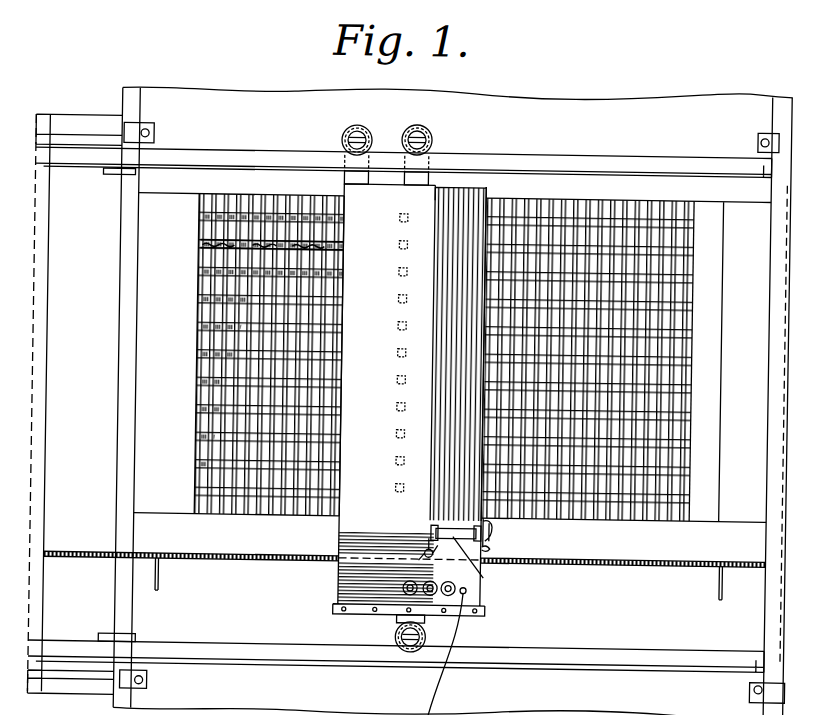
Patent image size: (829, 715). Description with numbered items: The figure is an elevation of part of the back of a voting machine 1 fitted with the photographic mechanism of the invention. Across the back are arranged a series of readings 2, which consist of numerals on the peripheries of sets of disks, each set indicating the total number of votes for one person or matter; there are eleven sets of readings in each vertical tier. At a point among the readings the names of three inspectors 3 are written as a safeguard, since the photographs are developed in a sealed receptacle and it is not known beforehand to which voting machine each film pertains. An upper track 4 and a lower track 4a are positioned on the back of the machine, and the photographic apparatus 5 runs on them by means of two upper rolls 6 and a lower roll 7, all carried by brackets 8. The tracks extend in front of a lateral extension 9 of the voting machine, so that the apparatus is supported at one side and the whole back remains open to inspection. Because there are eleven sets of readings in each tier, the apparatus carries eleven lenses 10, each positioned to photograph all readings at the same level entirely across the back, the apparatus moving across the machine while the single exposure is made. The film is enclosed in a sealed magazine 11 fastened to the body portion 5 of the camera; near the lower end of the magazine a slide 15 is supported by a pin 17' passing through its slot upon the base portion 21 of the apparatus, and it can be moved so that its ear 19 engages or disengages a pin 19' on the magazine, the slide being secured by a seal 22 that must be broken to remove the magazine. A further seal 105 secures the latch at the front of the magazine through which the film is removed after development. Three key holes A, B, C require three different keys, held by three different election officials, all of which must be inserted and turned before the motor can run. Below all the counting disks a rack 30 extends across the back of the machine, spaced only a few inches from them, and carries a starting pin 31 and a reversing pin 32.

The back of the voting machine 1 is at (556, 90).
The readings 2 is at (188, 311).
The names of inspectors 3 is at (198, 244).
The upper track 4 is at (210, 142).
The lower track 4a is at (233, 657).
The photographic apparatus 5 is at (357, 517).
The upper rolls 6 is at (425, 132).
The lower roll 7 is at (429, 636).
The brackets 8 is at (402, 618).
The lateral extension 9 is at (68, 407).
The lenses 10 is at (390, 226).
The magazine 11 is at (467, 200).
The slide 15 is at (483, 566).
The pin 17' is at (504, 554).
The ear 19 is at (443, 509).
The pin 19' is at (456, 520).
The base portion 21 is at (352, 578).
The seal 22 is at (427, 553).
The rack 30 is at (591, 566).
The starting pin 31 is at (163, 579).
The reversing pin 32 is at (720, 583).
The seal 105 is at (494, 541).
The key hole A is at (448, 577).
The key hole B is at (430, 577).
The key hole C is at (410, 577).